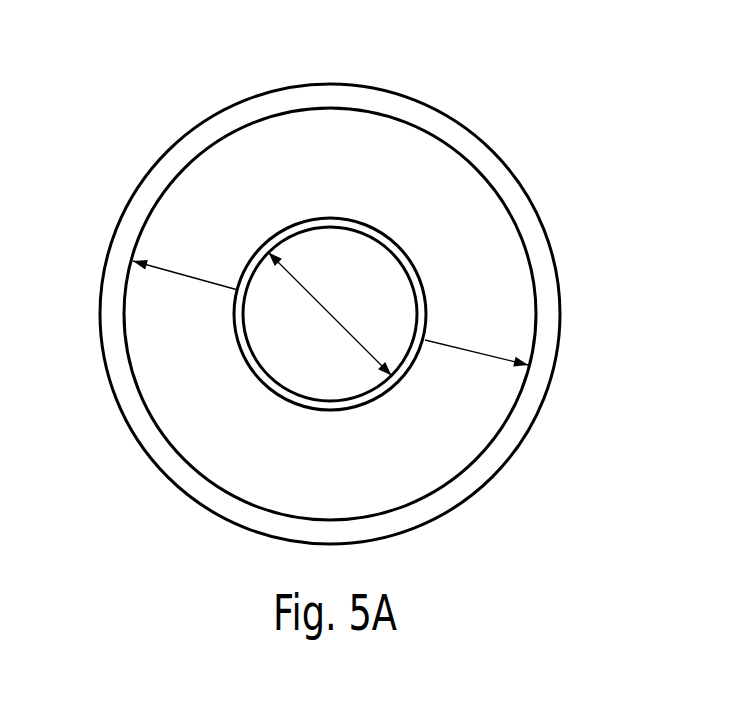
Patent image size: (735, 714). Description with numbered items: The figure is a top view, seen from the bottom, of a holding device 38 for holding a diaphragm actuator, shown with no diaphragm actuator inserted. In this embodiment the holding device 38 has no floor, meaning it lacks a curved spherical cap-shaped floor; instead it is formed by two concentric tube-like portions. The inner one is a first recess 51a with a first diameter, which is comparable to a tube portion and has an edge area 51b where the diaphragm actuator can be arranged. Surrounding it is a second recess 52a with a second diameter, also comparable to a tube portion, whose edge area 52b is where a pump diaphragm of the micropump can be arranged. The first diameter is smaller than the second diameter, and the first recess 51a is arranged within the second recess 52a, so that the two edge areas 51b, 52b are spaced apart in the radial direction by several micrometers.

The holding device 38 is at (499, 81).
The first recess 51a is at (337, 370).
The edge area 51b is at (368, 228).
The second recess 52a is at (335, 468).
The edge area 52b is at (550, 316).